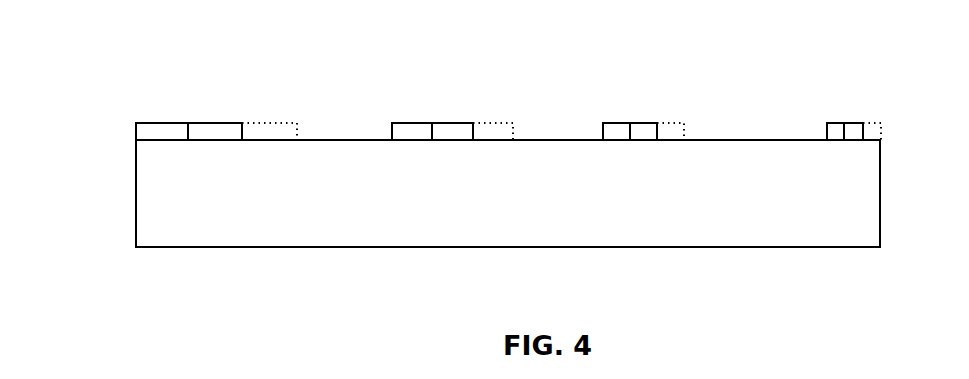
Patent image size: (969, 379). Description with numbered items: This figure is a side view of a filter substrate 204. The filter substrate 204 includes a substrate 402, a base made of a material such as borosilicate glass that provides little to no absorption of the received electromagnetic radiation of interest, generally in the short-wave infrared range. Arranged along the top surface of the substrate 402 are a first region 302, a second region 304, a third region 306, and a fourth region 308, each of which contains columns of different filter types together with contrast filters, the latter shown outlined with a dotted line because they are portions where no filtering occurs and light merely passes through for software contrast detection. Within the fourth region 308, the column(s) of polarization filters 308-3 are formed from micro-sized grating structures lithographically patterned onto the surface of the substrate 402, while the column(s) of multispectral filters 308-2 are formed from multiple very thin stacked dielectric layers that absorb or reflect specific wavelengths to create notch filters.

The filter substrate 204 is at (95, 82).
The substrate 402 is at (528, 205).
The fourth region 308 is at (216, 120).
The column(s) of polarization filters 308-3 is at (153, 141).
The column(s) of multispectral filters 308-2 is at (217, 141).
The third region 306 is at (514, 93).
The second region 304 is at (686, 93).
The first region 302 is at (882, 93).